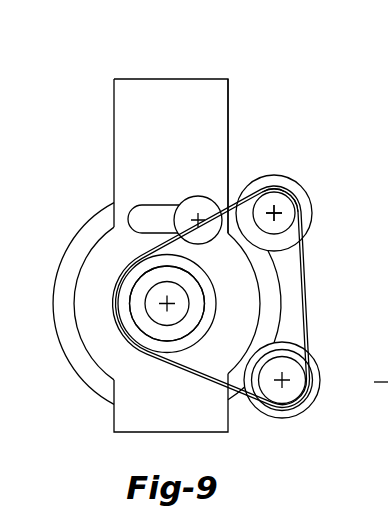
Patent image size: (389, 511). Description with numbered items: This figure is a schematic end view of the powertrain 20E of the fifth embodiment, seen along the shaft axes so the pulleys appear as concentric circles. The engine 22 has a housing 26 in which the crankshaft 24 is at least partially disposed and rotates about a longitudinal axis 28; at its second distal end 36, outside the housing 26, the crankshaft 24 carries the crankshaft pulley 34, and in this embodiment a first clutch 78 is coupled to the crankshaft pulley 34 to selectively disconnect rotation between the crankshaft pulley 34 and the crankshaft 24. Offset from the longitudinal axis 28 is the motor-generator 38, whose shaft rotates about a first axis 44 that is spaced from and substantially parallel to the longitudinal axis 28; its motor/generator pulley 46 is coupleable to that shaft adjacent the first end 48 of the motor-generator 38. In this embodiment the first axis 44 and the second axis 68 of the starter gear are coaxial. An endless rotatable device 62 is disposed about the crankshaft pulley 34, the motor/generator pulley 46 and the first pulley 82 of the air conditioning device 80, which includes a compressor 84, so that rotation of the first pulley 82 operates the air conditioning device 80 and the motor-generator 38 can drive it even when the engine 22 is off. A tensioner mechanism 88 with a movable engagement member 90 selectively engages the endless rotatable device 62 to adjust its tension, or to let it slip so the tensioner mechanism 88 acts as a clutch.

The powertrain 20E is at (107, 42).
The engine 22 is at (172, 79).
The crankshaft 24 is at (163, 324).
The housing 26 is at (213, 128).
The longitudinal axis 28 is at (158, 304).
The crankshaft pulley 34 is at (133, 272).
The second distal end 36 is at (183, 314).
The motor-generator 38 is at (300, 186).
The first axis 44 is at (283, 218).
The motor/generator pulley 46 is at (272, 197).
The first end 48 is at (310, 207).
The endless rotatable device 62 is at (310, 279).
The second axis 68 is at (324, 226).
The first clutch 78 is at (201, 301).
The air conditioning device 80 is at (299, 416).
The first pulley 82 is at (270, 407).
The compressor 84 is at (296, 347).
The tensioner mechanism 88 is at (149, 206).
The engagement member 90 is at (190, 197).